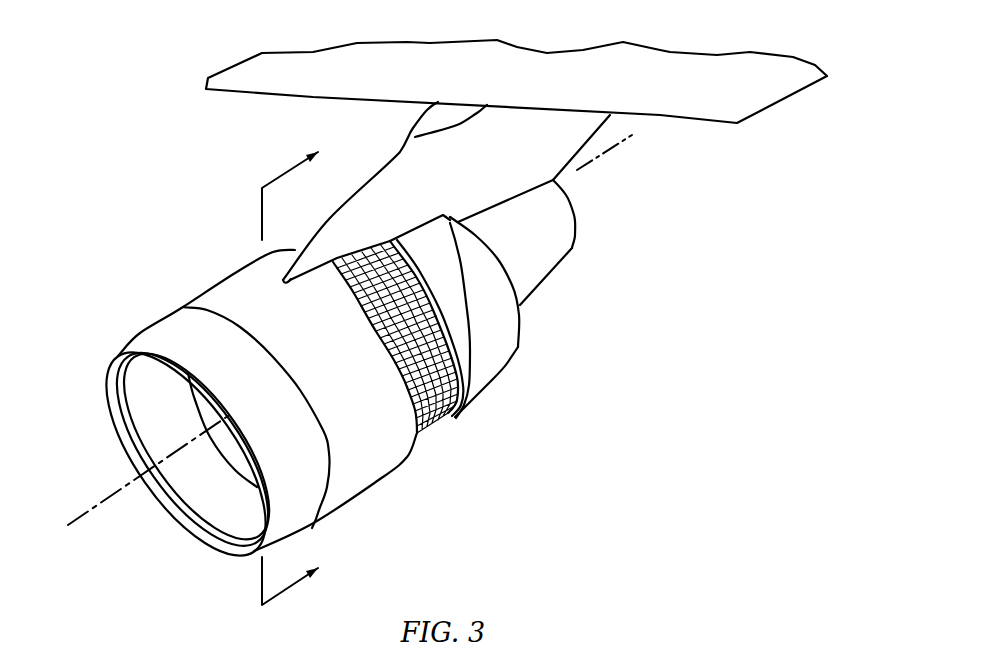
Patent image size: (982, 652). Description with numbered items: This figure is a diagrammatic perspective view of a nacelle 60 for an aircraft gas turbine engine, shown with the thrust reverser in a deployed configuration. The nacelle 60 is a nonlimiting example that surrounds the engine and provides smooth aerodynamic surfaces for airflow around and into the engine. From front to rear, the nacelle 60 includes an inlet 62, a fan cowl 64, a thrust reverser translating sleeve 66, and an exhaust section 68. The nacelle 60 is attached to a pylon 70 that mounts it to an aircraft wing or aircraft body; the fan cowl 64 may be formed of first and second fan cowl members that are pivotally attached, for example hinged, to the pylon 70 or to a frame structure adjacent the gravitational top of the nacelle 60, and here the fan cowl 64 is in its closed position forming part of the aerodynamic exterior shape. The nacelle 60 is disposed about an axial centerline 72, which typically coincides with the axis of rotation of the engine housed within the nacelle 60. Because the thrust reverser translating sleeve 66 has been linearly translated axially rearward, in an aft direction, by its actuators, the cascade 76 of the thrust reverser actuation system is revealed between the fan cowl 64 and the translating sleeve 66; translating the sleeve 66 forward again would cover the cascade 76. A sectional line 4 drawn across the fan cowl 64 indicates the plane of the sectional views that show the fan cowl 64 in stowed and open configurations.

The nacelle 60 is at (140, 197).
The inlet 62 is at (148, 414).
The fan cowl 64 is at (367, 462).
The thrust reverser translating sleeve 66 is at (502, 342).
The exhaust section 68 is at (530, 222).
The pylon 70 is at (502, 132).
The axial centerline 72 is at (83, 517).
The cascade 76 is at (453, 420).
The sectional line 4- 4 is at (298, 368).